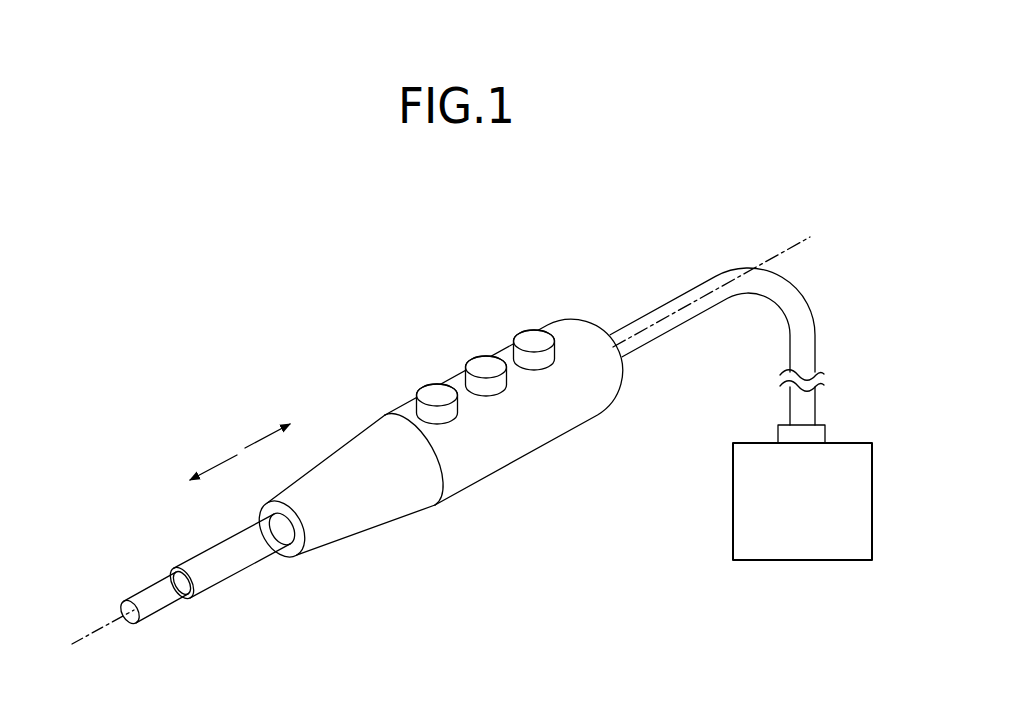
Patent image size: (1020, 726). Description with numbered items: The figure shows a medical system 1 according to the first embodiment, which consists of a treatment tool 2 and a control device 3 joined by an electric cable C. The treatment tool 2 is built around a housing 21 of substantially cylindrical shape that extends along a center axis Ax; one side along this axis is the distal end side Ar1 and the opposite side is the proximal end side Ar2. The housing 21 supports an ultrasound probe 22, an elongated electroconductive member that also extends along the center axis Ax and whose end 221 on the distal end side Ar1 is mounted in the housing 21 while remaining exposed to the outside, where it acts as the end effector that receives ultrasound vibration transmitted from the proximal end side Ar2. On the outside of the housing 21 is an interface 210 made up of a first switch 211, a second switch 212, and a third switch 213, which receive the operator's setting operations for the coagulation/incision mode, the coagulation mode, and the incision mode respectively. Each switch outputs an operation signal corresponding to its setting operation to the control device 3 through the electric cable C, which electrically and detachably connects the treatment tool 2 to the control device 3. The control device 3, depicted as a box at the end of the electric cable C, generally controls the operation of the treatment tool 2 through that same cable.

The medical system 1 is at (645, 218).
The treatment tool 2 is at (346, 346).
The control device 3 is at (853, 443).
The housing 21 is at (491, 452).
The ultrasound probe 22 is at (162, 595).
The end 221 is at (138, 594).
The interface 210 is at (543, 272).
The first switch 211 is at (437, 393).
The second switch 212 is at (486, 365).
The third switch 213 is at (534, 339).
The electric cable C is at (814, 348).
The center axis Ax is at (82, 640).
The distal end side Ar1 is at (215, 460).
The proximal end side Ar2 is at (268, 432).